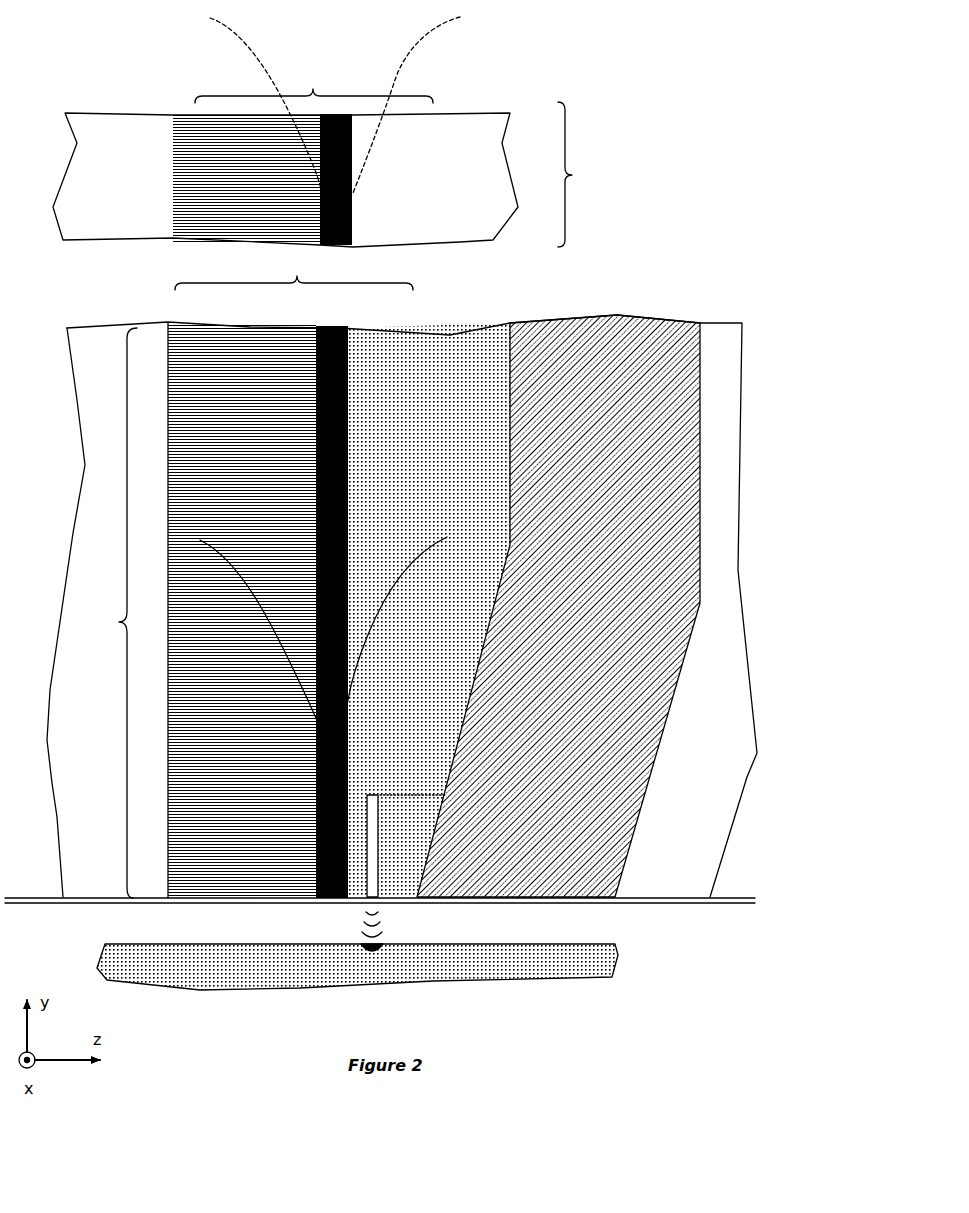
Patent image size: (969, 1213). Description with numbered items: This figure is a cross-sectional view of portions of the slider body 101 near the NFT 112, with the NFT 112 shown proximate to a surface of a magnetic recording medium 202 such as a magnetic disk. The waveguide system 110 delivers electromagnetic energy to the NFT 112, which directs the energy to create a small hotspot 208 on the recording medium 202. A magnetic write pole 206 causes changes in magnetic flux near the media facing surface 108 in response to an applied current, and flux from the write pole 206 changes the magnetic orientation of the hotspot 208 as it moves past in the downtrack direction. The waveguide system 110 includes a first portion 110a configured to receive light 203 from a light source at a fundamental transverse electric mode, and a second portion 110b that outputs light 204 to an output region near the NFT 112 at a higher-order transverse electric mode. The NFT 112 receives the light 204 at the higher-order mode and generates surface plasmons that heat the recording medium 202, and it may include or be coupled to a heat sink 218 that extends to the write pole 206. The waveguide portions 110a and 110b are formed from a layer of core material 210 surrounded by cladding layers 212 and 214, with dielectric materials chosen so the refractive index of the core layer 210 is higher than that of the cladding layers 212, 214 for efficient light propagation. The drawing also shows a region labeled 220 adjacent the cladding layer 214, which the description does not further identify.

The slider body 101 is at (712, 102).
The media facing surface 108 is at (660, 898).
The waveguide system 110 is at (304, 172).
The first portion 110a is at (337, 132).
The second portion 110b is at (402, 606).
The NFT 112 is at (370, 878).
The magnetic recording medium 202 is at (155, 968).
The light 203 is at (301, 152).
The light 204 is at (300, 692).
The magnetic write pole 206 is at (620, 316).
The hotspot 208 is at (372, 950).
The core layer 210 is at (333, 246).
The cladding layer 212 is at (460, 242).
The cladding layer 214 is at (203, 234).
The heat sink 218 is at (406, 868).
The gap 220 is at (110, 872).